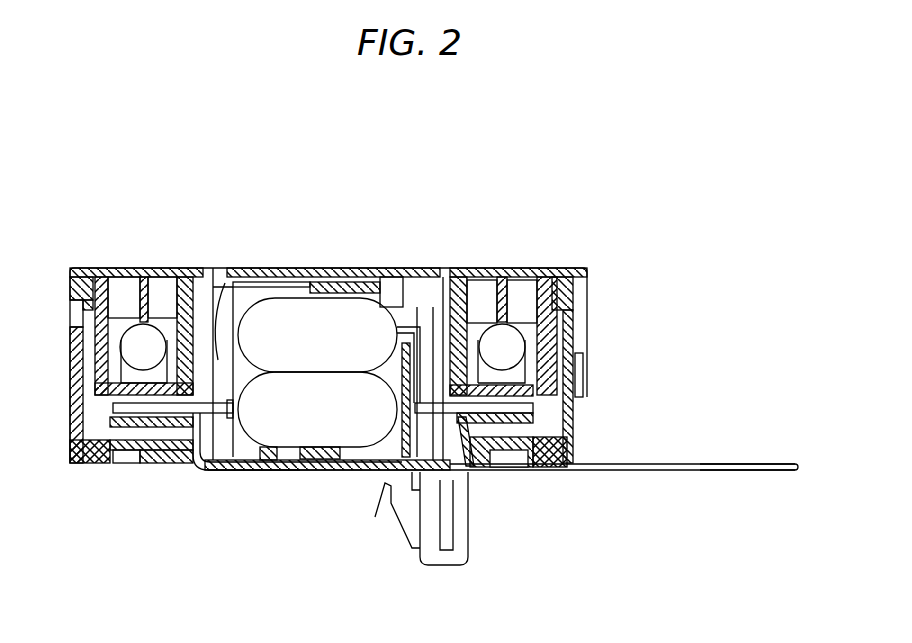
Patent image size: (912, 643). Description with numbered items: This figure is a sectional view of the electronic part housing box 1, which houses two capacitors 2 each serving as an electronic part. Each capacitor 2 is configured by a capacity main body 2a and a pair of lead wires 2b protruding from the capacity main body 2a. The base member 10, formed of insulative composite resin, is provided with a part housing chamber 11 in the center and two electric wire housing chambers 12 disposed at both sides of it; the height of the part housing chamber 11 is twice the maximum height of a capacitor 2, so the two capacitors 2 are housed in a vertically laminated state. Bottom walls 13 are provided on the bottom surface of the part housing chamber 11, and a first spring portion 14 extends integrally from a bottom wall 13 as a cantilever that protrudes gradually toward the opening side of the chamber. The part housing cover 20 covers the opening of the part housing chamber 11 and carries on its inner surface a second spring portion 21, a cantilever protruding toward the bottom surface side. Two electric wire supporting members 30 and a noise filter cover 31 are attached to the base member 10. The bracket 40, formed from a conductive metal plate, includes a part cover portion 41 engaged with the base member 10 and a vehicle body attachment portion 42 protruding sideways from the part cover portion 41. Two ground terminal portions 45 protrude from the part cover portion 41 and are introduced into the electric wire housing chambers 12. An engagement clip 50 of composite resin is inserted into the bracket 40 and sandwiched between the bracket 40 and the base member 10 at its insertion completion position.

The electronic part housing box 1 is at (195, 186).
The capacitor 2 is at (285, 298).
The capacity main body 2a is at (323, 402).
The lead wire 2b is at (112, 380).
The base member 10 is at (568, 340).
The part housing chamber 11 is at (225, 268).
The electric wire housing chamber 12 is at (175, 360).
The bottom wall 13 is at (355, 466).
The first spring portion 14 is at (308, 470).
The part housing cover 20 is at (383, 268).
The second spring portion 21 is at (312, 282).
The electric wire supporting member 30 is at (120, 268).
The noise filter cover 31 is at (160, 450).
The bracket 40 is at (613, 480).
The part cover portion 41 is at (270, 474).
The vehicle body attachment portion 42 is at (705, 470).
The ground terminal portion 45 is at (125, 450).
The engagement clip 50 is at (452, 557).